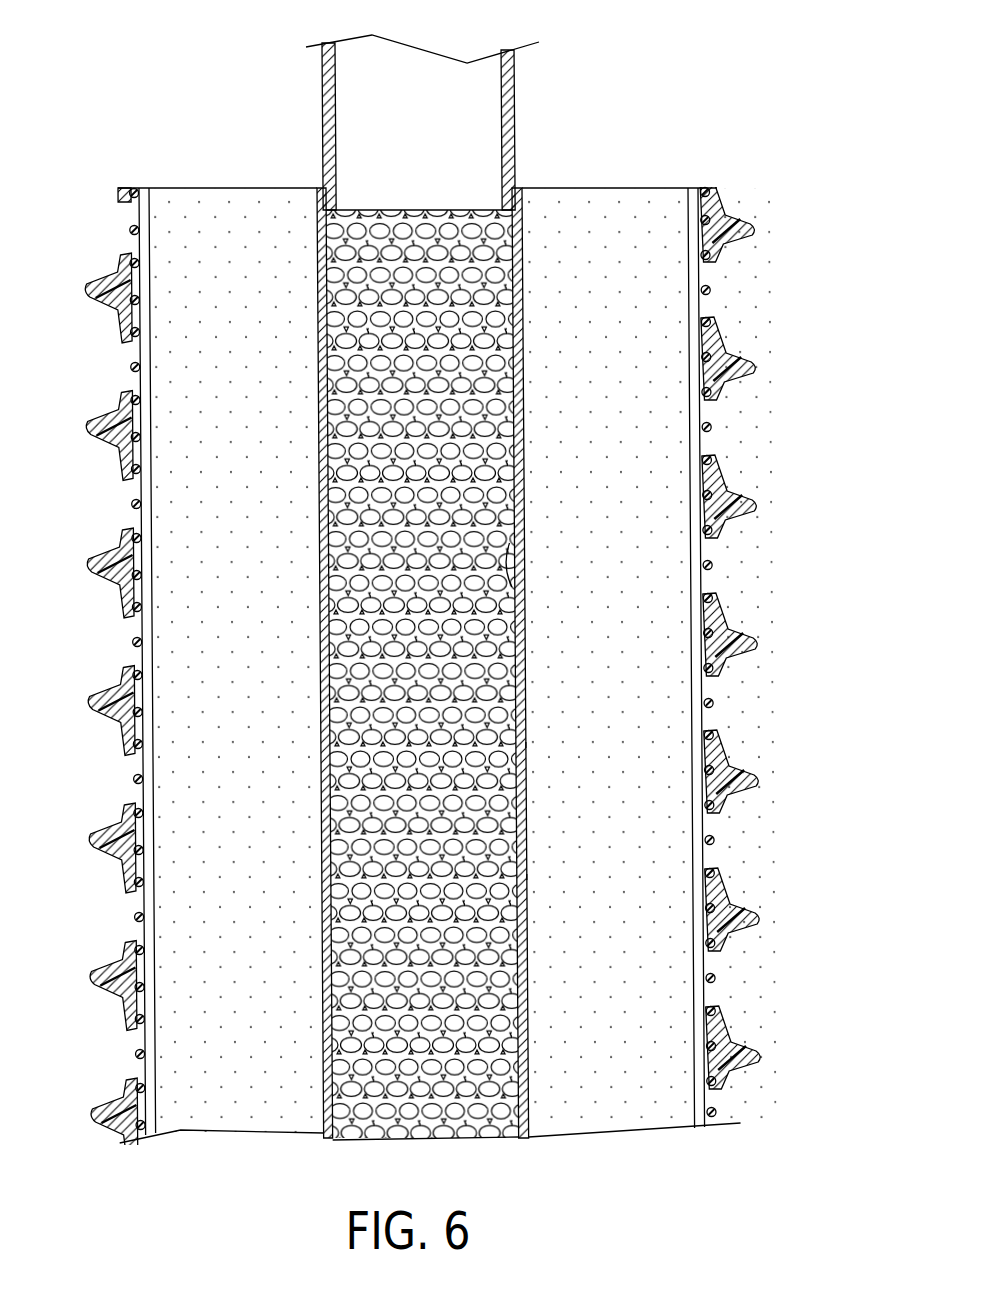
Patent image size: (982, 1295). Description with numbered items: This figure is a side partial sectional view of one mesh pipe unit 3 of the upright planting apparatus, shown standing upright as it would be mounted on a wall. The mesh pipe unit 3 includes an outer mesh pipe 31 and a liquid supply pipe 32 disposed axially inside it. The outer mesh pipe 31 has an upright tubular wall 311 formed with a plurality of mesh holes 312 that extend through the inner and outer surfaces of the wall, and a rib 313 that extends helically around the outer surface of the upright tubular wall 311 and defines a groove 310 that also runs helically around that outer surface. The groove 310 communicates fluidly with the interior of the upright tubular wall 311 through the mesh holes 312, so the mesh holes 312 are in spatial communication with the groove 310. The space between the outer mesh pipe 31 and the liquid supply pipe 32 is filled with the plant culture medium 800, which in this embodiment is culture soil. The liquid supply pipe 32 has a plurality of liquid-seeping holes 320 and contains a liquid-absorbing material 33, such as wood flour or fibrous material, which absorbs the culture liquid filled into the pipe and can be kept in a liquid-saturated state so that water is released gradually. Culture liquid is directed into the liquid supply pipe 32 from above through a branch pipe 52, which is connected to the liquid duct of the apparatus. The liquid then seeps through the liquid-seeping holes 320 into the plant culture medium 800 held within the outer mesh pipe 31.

The mesh pipe unit 3 is at (125, 188).
The outer mesh pipe 31 is at (91, 276).
The groove 310 is at (740, 614).
The upright tubular wall 311 is at (703, 221).
The mesh holes 312 is at (738, 540).
The rib 313 is at (728, 358).
The liquid supply pipe 32 is at (522, 593).
The liquid-seeping holes 320 is at (520, 571).
The liquid-absorbing material 33 is at (447, 240).
The branch pipe 52 is at (510, 82).
The plant culture medium 800 is at (209, 226).